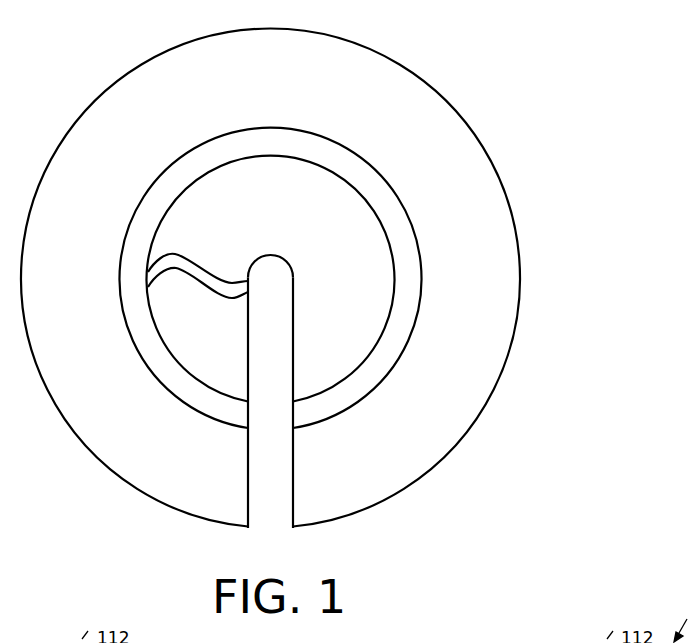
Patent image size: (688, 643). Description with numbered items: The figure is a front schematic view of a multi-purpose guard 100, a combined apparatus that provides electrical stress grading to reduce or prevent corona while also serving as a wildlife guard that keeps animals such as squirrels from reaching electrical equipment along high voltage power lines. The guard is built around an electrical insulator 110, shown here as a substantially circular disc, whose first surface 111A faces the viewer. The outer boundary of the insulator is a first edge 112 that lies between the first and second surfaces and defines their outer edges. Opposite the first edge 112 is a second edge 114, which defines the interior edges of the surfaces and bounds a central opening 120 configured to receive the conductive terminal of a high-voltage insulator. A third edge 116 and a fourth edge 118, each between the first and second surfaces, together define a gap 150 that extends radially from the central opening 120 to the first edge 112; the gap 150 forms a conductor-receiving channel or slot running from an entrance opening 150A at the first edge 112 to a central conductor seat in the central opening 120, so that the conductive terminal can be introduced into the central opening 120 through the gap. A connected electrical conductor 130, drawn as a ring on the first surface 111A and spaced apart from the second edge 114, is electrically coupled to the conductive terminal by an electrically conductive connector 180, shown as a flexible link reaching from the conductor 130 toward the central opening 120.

The multi-purpose guard 100 is at (529, 107).
The electrical insulator 110 is at (394, 75).
The first surface 111A is at (499, 248).
The first edge 112 is at (519, 312).
The second edge 114 is at (268, 256).
The third edge 116 is at (248, 445).
The fourth edge 118 is at (295, 445).
The central opening 120 is at (275, 273).
The connected electrical conductor 130 is at (288, 145).
The gap 150 is at (263, 352).
The entrance opening 150A is at (270, 528).
The electrically conductive connector 180 is at (198, 270).